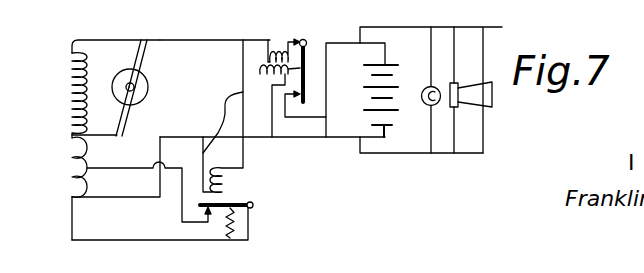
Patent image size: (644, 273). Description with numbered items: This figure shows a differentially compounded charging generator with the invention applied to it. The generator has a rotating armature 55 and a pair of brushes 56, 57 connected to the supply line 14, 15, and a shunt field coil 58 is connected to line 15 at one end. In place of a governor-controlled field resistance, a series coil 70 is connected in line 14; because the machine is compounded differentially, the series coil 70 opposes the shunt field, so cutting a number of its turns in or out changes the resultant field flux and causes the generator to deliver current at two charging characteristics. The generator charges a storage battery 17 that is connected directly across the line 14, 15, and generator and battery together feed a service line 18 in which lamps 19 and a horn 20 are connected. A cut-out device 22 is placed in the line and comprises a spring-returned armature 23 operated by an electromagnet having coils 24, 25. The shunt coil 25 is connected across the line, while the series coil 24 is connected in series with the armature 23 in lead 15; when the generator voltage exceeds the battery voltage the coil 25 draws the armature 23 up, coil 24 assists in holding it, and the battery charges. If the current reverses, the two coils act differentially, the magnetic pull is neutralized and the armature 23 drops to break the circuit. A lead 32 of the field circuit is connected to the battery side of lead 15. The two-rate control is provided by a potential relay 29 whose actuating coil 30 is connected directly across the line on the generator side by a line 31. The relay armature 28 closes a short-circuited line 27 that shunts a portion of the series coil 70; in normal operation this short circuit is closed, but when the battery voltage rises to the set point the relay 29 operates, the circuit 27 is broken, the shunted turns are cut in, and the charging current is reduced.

The supply line 14 is at (322, 138).
The supply line 15 is at (217, 40).
The storage battery 17 is at (397, 113).
The service line 18 is at (487, 28).
The lamps 19 is at (437, 90).
The horn 20 is at (483, 95).
The cut-out device 22 is at (305, 67).
The armature 23 is at (306, 82).
The coil 24 is at (274, 48).
The coil 25 is at (262, 73).
The short-circuited line 27 is at (115, 239).
The armature 28 is at (222, 203).
The relay 29 is at (193, 205).
The actuating coil 30 is at (222, 180).
The line 31 is at (222, 122).
The lead 32 is at (110, 40).
The armature 55 is at (137, 87).
The brush 56 is at (137, 50).
The brush 57 is at (136, 107).
The field coil 58 is at (72, 80).
The series coil 70 is at (72, 156).